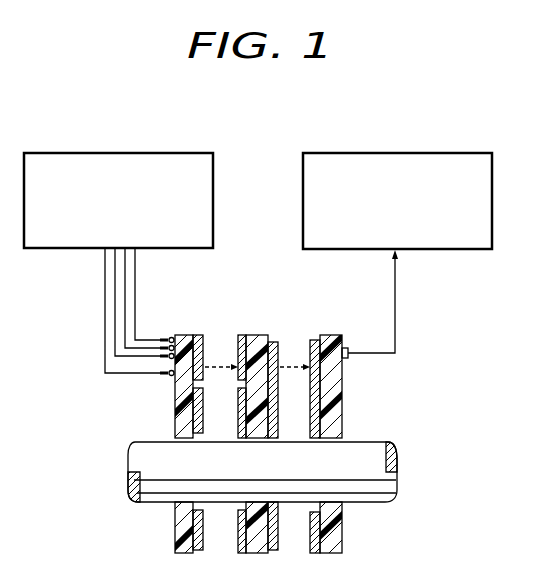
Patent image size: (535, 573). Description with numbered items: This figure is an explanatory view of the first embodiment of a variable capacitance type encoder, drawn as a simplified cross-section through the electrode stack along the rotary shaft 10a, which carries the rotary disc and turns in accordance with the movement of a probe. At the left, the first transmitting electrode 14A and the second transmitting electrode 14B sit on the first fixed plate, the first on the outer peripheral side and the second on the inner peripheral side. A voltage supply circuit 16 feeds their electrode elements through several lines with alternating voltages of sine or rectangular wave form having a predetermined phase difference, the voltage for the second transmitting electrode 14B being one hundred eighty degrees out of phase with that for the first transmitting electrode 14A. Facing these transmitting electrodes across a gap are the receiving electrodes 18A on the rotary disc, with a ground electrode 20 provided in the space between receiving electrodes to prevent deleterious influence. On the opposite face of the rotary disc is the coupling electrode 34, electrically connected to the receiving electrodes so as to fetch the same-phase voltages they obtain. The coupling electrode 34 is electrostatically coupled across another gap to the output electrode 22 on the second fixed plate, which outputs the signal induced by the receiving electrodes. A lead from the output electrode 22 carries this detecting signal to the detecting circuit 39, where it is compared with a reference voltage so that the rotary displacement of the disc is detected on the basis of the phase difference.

The voltage supply circuit 16 is at (117, 152).
The detecting circuit 39 is at (393, 153).
The first transmitting electrode 14A is at (196, 335).
The second transmitting electrode 14B is at (208, 395).
The receiving electrodes 18A is at (241, 335).
The ground electrode 20 is at (240, 430).
The coupling electrode 34 is at (273, 342).
The output electrode 22 is at (315, 340).
The rotary shaft 10a is at (372, 442).